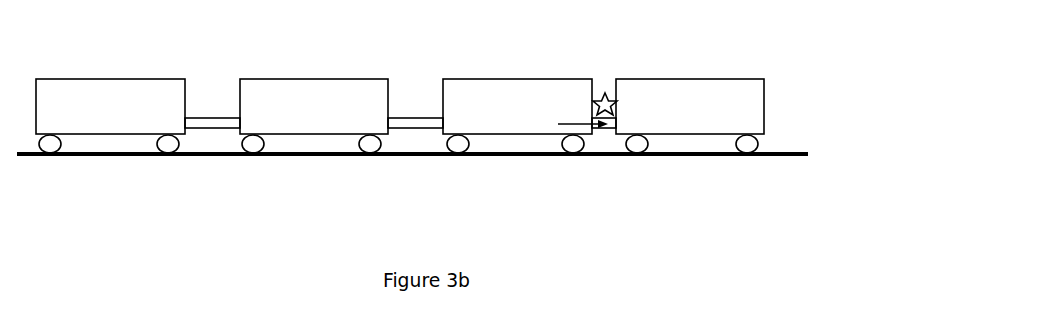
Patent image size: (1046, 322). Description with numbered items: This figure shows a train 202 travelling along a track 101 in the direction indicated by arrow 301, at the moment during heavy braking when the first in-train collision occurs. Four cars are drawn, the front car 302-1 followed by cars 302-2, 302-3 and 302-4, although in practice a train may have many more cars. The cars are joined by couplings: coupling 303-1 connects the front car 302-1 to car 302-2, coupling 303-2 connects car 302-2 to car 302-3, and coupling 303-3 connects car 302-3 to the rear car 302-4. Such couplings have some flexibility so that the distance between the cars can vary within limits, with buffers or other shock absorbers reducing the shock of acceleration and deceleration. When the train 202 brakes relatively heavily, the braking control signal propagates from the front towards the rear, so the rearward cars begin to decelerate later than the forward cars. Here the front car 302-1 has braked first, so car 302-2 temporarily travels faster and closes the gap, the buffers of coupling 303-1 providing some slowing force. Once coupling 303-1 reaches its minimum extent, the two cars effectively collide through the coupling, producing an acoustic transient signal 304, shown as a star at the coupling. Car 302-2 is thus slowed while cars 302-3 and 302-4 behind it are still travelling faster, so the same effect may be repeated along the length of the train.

The track 101 is at (127, 155).
The train 202 is at (198, 55).
The arrow 301 is at (500, 33).
The car 302-1 is at (708, 116).
The car 302-2 is at (516, 116).
The car 302-3 is at (334, 116).
The car 302-4 is at (131, 116).
The coupling 303-1 is at (605, 130).
The coupling 303-2 is at (412, 132).
The coupling 303-3 is at (210, 133).
The acoustic transient signal 304 is at (605, 93).